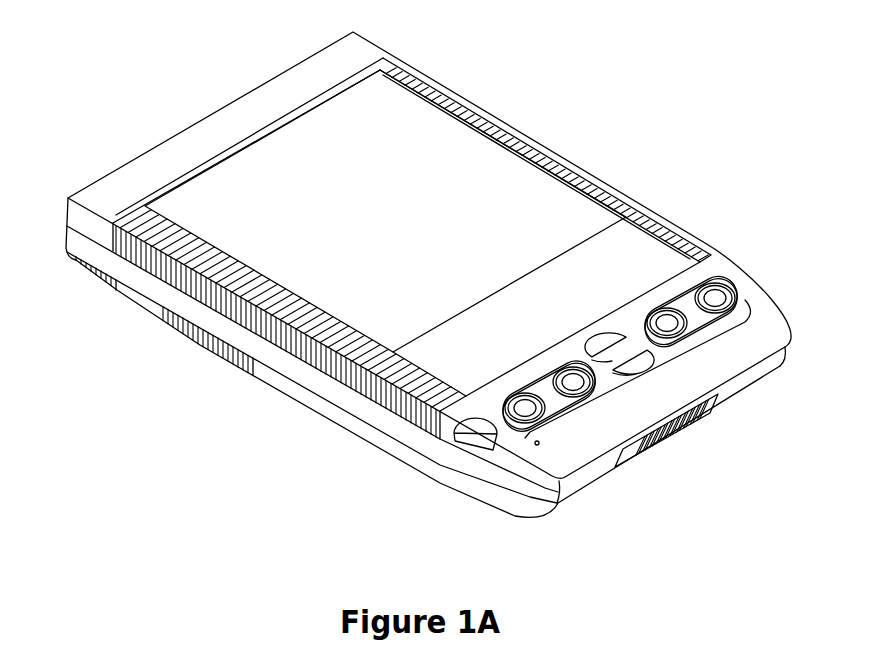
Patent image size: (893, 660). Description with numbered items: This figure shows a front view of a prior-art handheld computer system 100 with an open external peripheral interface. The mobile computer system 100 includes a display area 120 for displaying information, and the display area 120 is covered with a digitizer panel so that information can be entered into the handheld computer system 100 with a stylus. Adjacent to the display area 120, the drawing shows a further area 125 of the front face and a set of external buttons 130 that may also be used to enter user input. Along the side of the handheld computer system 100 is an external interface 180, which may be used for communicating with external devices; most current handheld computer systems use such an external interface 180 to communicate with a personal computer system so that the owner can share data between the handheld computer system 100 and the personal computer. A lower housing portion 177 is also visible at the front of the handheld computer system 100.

The handheld computer system 100 is at (245, 456).
The display area 120 is at (385, 211).
The input area 125 is at (546, 329).
The external buttons 130 is at (620, 354).
The bottom housing portion 177 is at (476, 498).
The external interface 180 is at (725, 422).